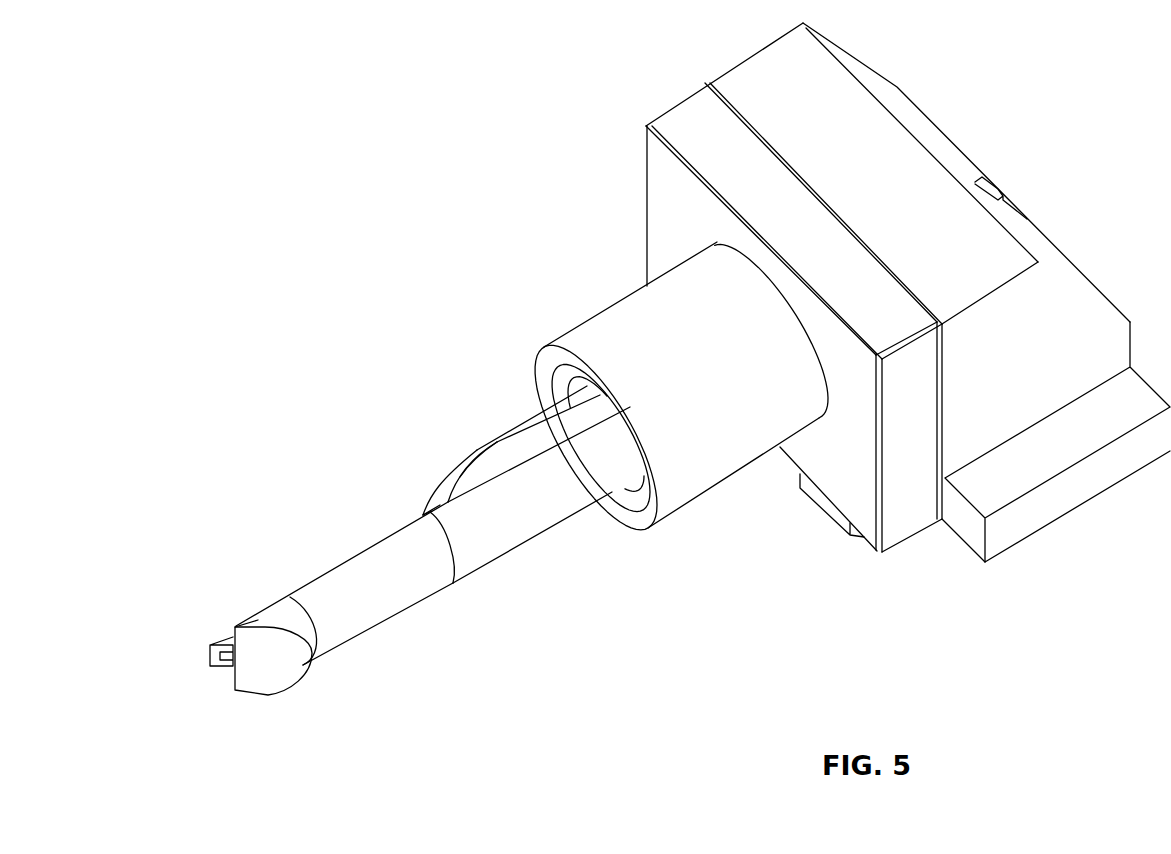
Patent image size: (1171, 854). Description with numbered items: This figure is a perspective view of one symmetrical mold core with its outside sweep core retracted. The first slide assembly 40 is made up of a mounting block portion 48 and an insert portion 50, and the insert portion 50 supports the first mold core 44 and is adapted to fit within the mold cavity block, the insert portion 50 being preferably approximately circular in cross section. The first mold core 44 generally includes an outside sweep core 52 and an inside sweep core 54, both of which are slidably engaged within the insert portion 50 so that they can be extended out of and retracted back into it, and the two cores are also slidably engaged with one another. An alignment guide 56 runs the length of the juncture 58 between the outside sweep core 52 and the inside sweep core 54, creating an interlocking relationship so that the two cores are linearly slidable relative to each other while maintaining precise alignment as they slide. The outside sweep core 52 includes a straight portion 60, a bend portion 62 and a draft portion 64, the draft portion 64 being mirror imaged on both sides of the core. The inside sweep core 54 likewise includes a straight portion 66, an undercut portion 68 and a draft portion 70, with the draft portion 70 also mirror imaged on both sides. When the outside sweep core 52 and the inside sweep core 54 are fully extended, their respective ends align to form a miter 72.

The first slide assembly 40 is at (1072, 264).
The first mold core 44 is at (523, 418).
The mounting block portion 48 is at (1120, 312).
The insert portion 50 is at (717, 486).
The outside sweep core 52 is at (425, 500).
The inside sweep core 54 is at (425, 602).
The alignment guide 56 is at (212, 658).
The juncture 58 is at (503, 473).
The straight portion 60 is at (533, 410).
The bend portion 62 is at (423, 506).
The draft portion 64 is at (493, 460).
The straight portion 66 is at (380, 627).
The undercut portion 68 is at (303, 665).
The draft portion 70 is at (257, 617).
The miter 72 is at (265, 670).